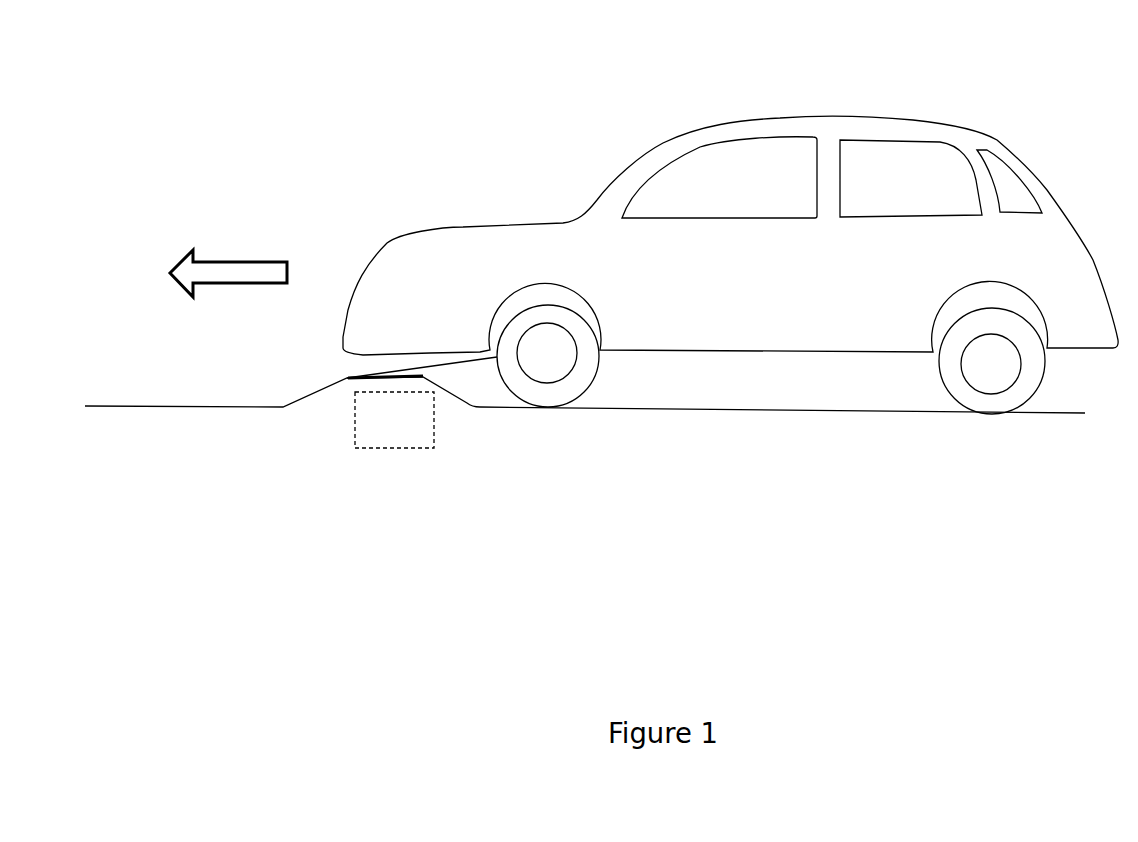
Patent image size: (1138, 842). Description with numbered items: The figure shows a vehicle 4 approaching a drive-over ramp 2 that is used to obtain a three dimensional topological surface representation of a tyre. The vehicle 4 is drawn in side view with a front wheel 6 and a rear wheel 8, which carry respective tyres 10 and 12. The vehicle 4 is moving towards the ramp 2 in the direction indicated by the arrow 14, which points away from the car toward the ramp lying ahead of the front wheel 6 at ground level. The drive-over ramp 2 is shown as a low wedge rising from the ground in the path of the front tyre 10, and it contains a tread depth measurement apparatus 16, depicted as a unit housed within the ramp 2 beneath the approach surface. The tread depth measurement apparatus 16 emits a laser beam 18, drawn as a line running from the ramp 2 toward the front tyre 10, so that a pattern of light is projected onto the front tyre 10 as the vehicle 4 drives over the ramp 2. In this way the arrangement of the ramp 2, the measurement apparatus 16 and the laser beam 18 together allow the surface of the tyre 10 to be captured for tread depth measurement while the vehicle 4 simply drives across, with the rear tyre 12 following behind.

The drive-over ramp 2 is at (355, 455).
The vehicle 4 is at (472, 253).
The front wheel 6 is at (547, 353).
The rear wheel 8 is at (991, 364).
The front tyre 10 is at (545, 392).
The rear tyre 12 is at (993, 405).
The arrow 14 is at (247, 283).
The tread depth measurement apparatus 16 is at (379, 435).
The laser beam 18 is at (453, 375).